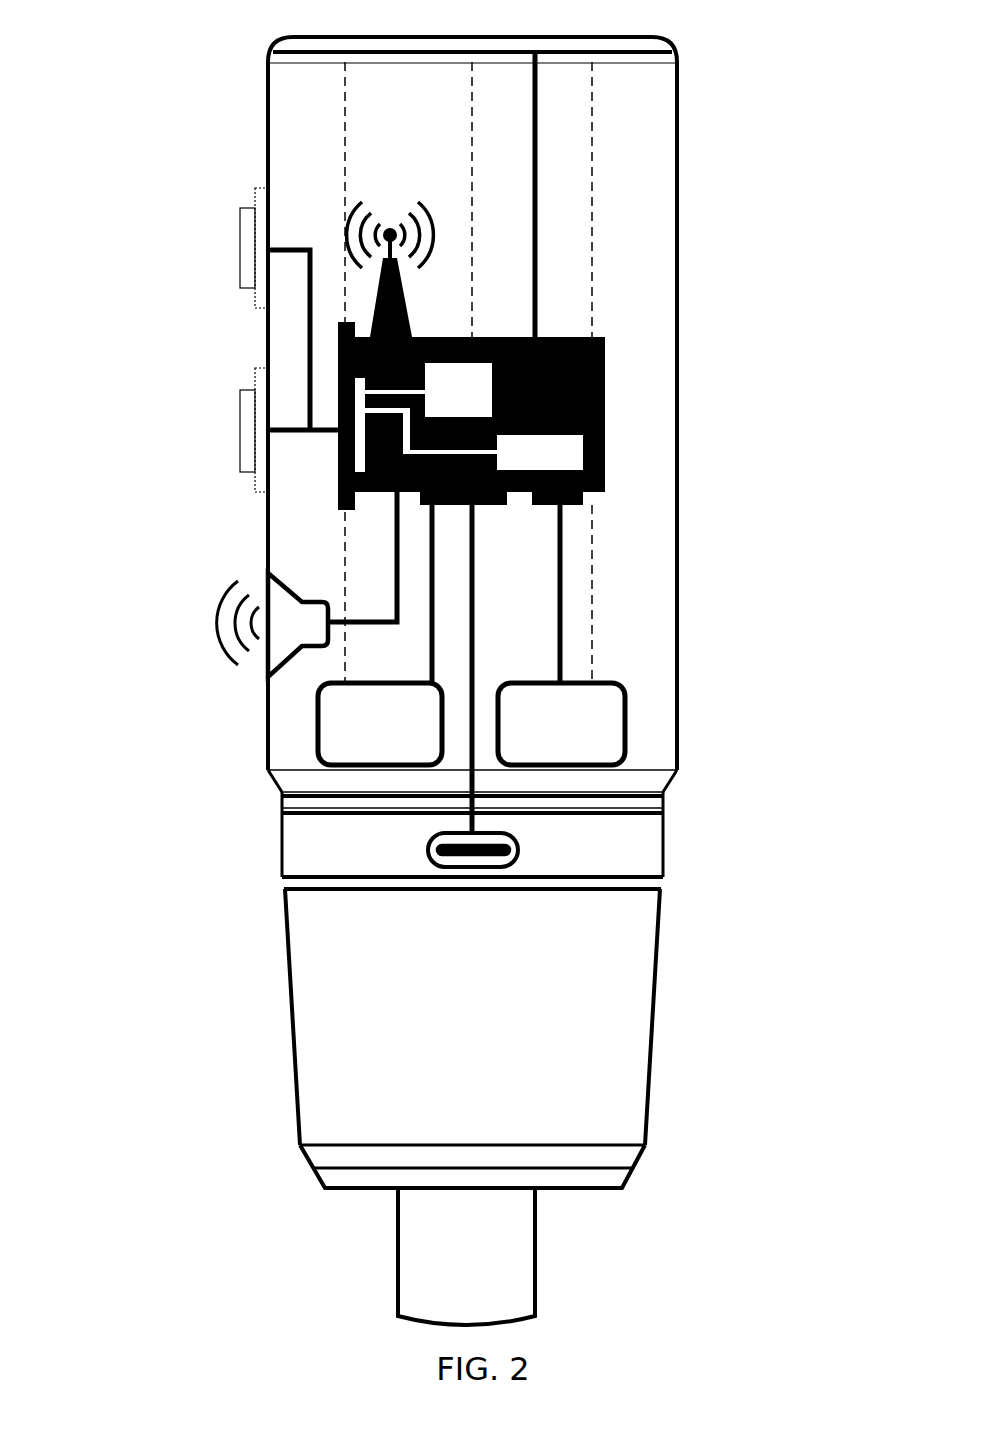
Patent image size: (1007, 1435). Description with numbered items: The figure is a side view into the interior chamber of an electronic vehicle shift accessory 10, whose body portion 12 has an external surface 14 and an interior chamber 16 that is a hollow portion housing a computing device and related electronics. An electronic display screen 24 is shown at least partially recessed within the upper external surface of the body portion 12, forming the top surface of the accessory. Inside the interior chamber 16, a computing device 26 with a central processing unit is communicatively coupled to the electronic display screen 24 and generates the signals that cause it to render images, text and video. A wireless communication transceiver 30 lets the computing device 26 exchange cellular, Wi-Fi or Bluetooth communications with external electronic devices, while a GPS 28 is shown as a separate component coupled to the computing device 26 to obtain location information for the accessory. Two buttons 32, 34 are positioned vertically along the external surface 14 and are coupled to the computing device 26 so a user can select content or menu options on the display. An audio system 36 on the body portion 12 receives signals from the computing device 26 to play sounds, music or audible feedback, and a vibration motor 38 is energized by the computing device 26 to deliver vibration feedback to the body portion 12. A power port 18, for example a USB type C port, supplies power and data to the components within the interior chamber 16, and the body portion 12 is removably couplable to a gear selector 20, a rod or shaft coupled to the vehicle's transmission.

The electronic vehicle shift accessory 10 is at (83, 96).
The body portion 12 is at (797, 198).
The external surface 14 is at (676, 160).
The interior chamber 16 is at (636, 308).
The power port 18 is at (518, 850).
The gear selector 20 is at (535, 1263).
The electronic display screen 24 is at (663, 43).
The computing device 26 is at (606, 426).
The GPS 28 is at (380, 724).
The wireless communication transceiver 30 is at (405, 312).
The button 32 is at (240, 238).
The button 34 is at (240, 428).
The audio system 36 is at (196, 617).
The vibration motor 38 is at (561, 724).